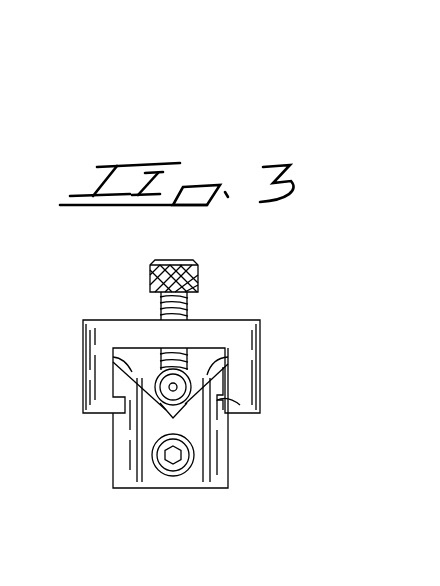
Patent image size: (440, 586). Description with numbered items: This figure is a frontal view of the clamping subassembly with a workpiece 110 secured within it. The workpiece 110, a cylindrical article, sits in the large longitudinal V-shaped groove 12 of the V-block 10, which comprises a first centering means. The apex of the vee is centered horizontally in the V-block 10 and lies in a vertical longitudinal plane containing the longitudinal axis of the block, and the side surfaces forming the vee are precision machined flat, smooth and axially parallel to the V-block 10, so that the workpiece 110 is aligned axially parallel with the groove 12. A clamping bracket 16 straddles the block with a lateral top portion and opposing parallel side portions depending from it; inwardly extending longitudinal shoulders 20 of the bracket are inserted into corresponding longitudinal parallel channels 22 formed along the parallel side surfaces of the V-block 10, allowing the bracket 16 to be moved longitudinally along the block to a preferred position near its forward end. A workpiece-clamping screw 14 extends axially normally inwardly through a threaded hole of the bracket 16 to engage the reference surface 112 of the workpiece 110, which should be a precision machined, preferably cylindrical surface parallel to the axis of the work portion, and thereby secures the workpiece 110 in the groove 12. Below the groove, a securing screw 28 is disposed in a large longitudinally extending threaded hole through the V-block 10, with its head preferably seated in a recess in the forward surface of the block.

The V-block 10 is at (228, 452).
The V-shaped groove 12 is at (197, 384).
The workpiece-clamping screw 14 is at (198, 274).
The clamping bracket 16 is at (218, 322).
The longitudinal shoulders 20 is at (217, 388).
The longitudinal parallel channels 22 is at (225, 407).
The securing screw 28 is at (175, 470).
The workpiece 110 is at (163, 402).
The reference surface 112 is at (218, 379).